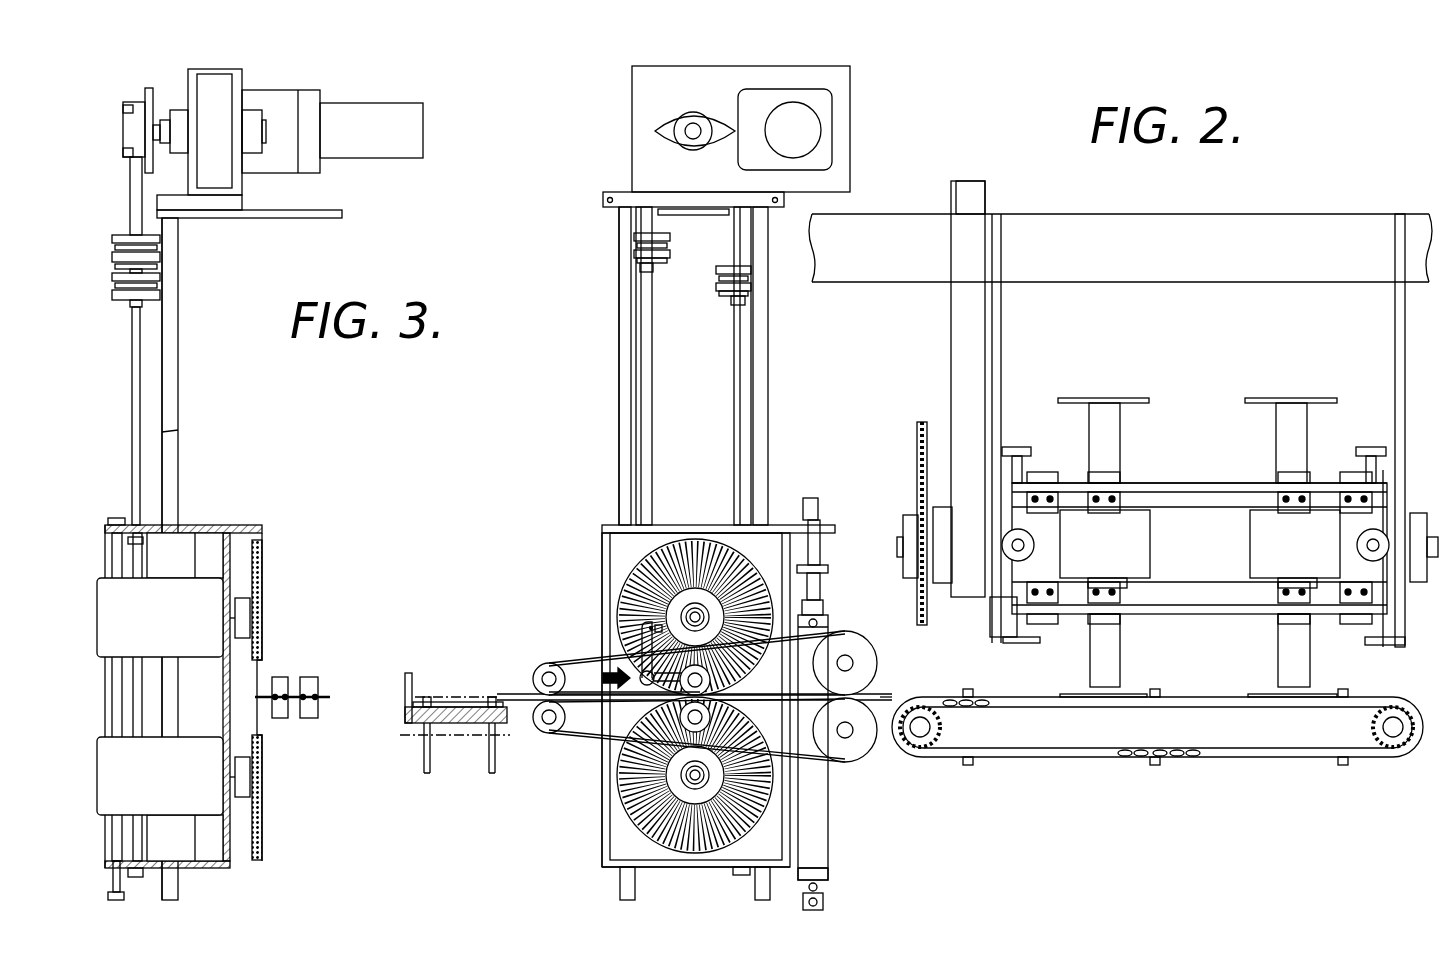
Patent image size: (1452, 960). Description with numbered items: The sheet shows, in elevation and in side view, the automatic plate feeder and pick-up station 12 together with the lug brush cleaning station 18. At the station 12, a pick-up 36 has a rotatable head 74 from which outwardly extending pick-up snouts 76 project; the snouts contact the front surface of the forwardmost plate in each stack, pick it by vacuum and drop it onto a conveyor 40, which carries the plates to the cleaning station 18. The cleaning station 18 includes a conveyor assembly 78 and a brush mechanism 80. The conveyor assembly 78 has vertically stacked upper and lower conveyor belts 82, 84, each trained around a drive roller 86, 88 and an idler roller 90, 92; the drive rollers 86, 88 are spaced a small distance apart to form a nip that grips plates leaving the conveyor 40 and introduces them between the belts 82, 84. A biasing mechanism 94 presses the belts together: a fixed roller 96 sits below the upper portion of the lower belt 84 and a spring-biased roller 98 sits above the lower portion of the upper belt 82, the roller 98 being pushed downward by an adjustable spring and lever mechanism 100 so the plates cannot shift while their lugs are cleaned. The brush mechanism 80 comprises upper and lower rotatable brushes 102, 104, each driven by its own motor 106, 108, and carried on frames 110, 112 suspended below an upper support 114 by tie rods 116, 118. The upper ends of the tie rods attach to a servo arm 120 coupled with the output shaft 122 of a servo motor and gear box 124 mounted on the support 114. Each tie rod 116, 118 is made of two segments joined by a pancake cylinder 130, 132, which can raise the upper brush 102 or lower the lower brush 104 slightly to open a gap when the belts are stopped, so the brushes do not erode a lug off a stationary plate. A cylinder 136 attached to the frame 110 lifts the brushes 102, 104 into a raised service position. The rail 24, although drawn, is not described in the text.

In FIG. 2, the automatic plate feeder and pick-up station 12 is at (1322, 195).
In FIG. 3, the lug brush cleaning station 18 is at (285, 438).
In FIG. 2, the lug brush cleaning station 18 is at (565, 368).
In FIG. 2, the guide rail 24 is at (432, 668).
In FIG. 2, the pick-up 36 is at (1200, 395).
In FIG. 2, the conveyor 40 is at (1195, 697).
In FIG. 2, the rotatable head 74 is at (1190, 518).
In FIG. 2, the pick-up snouts 76 is at (1295, 646).
In FIG. 2, the conveyor assembly 78 is at (905, 665).
In FIG. 2, the brush mechanism 80 is at (540, 592).
In FIG. 3, the upper conveyor belt 82 is at (308, 678).
In FIG. 2, the upper conveyor belt 82 is at (553, 660).
In FIG. 3, the lower conveyor belt 84 is at (308, 718).
In FIG. 2, the lower conveyor belt 84 is at (560, 735).
In FIG. 2, the drive roller 86 is at (848, 648).
In FIG. 2, the drive roller 88 is at (850, 752).
In FIG. 2, the idler roller 90 is at (535, 672).
In FIG. 2, the idler roller 92 is at (545, 733).
In FIG. 2, the biasing mechanism 94 is at (600, 678).
In FIG. 2, the fixed roller 96 is at (682, 718).
In FIG. 2, the spring-biased roller 98 is at (708, 676).
In FIG. 2, the spring and lever mechanism 100 is at (640, 626).
In FIG. 3, the upper brush 102 is at (262, 575).
In FIG. 2, the upper brush 102 is at (692, 545).
In FIG. 3, the lower brush 104 is at (262, 832).
In FIG. 2, the lower brush 104 is at (688, 848).
In FIG. 3, the motor 106 is at (157, 592).
In FIG. 3, the motor 108 is at (185, 748).
In FIG. 3, the frame 110 is at (212, 526).
In FIG. 2, the frame 110 is at (612, 526).
In FIG. 3, the frame 112 is at (215, 868).
In FIG. 2, the frame 112 is at (604, 868).
In FIG. 3, the upper support 114 is at (240, 203).
In FIG. 2, the upper support 114 is at (620, 196).
In FIG. 3, the tie rod 116 is at (135, 428).
In FIG. 2, the tie rod 116 is at (644, 400).
In FIG. 2, the tie rod 118 is at (740, 385).
In FIG. 3, the servo arm 120 is at (147, 100).
In FIG. 3, the output shaft 122 is at (160, 125).
In FIG. 2, the output shaft 122 is at (690, 125).
In FIG. 3, the servo motor and gear box 124 is at (385, 110).
In FIG. 2, the servo motor and gear box 124 is at (832, 110).
In FIG. 3, the pancake cylinder 130 is at (120, 236).
In FIG. 2, the pancake cylinder 130 is at (670, 248).
In FIG. 3, the pancake cylinder 132 is at (148, 300).
In FIG. 2, the pancake cylinder 132 is at (716, 285).
In FIG. 2, the cylinder 136 is at (826, 852).